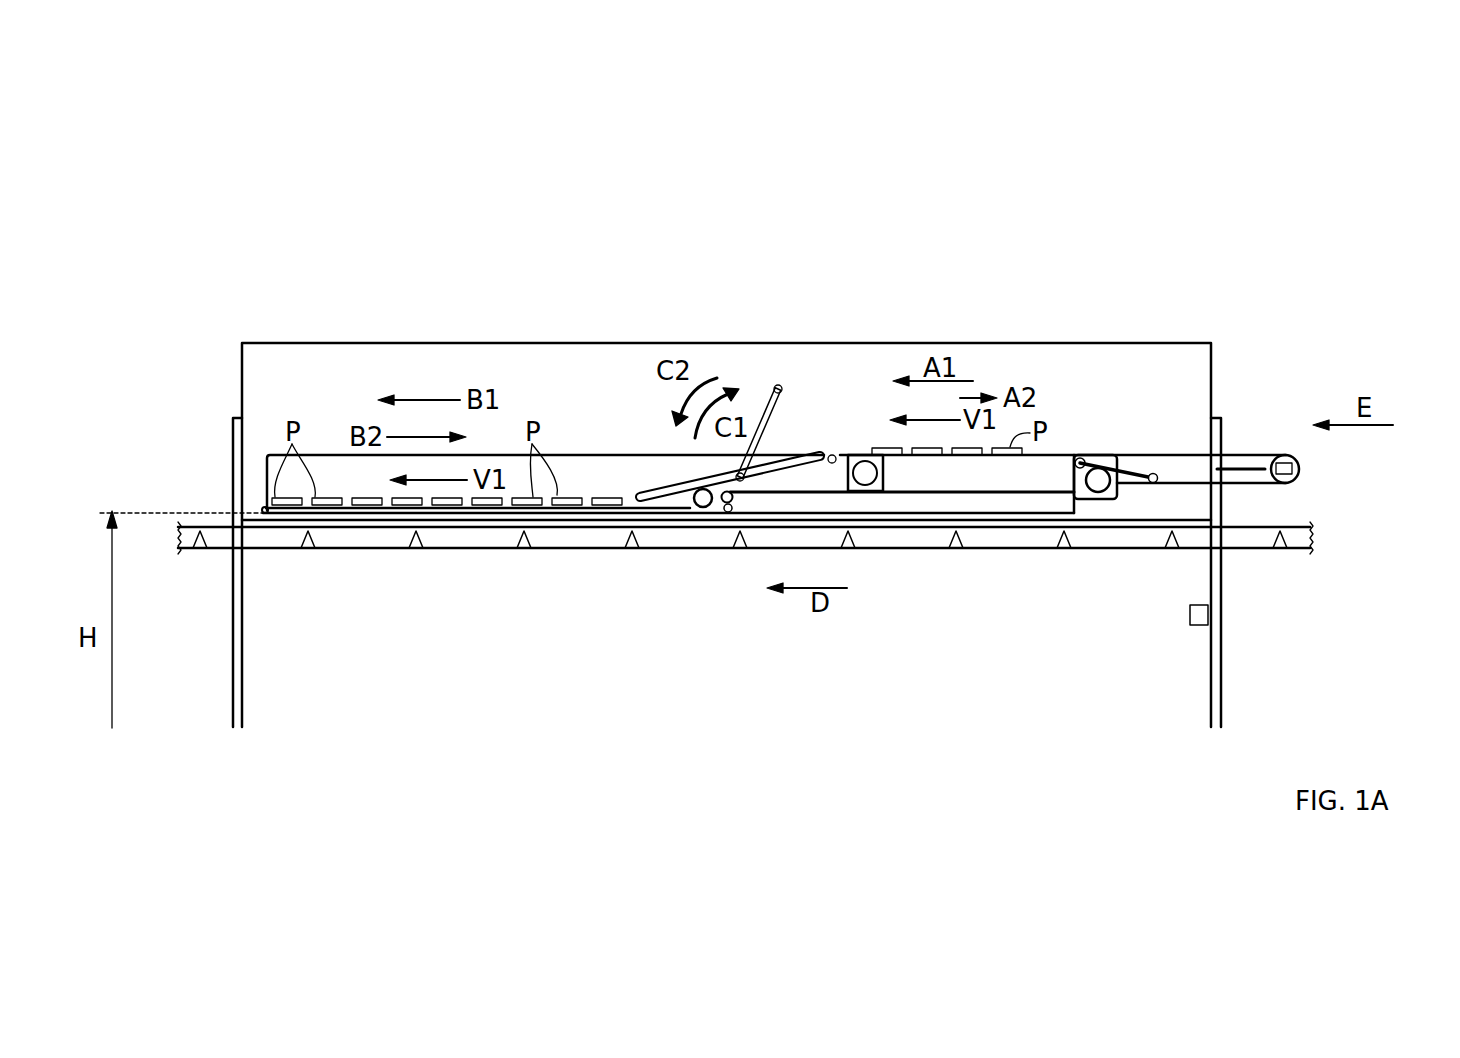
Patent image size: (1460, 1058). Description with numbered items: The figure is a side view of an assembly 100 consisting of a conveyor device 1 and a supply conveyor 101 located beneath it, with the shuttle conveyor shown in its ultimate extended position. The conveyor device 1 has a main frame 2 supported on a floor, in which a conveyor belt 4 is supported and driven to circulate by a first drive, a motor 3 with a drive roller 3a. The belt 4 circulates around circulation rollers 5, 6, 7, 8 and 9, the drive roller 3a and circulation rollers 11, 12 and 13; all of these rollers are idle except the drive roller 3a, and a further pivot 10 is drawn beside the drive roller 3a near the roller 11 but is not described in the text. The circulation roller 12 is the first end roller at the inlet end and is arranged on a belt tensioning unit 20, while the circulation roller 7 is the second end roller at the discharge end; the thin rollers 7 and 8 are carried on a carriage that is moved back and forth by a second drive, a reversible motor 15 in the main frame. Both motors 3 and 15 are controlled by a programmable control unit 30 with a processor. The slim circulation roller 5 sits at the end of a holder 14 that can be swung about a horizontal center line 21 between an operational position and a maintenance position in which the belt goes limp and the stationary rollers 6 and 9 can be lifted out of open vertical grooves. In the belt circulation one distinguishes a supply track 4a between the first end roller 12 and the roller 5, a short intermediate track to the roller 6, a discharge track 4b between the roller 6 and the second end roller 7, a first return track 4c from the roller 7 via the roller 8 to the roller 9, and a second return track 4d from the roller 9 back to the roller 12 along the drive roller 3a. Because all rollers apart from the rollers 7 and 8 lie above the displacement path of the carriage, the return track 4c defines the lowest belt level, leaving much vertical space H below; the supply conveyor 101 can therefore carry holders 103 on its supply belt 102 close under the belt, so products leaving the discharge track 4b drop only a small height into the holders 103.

The assembly 100 is at (300, 218).
The conveyor device 1 is at (1150, 246).
The main frame 2 is at (233, 652).
The motor 3 is at (1108, 455).
The drive roller 3a is at (1105, 485).
The conveyor belt 4 is at (1133, 455).
The supply track 4a is at (838, 455).
The discharge track 4b is at (327, 498).
The first return track 4c is at (588, 521).
The second return track 4d is at (1033, 496).
The circulation roller 5 is at (640, 497).
The circulation roller 6 is at (697, 504).
The circulation roller 7 is at (263, 510).
The circulation roller 8 is at (730, 503).
The circulation roller 9 is at (738, 483).
The pivot 10 is at (1078, 458).
The circulation roller 11 is at (1155, 473).
The circulation roller 12 is at (1286, 456).
The circulation roller 13 is at (832, 454).
The holder 14 is at (662, 491).
The motor 15 is at (866, 456).
The belt tensioning unit 20 is at (1250, 549).
The horizontal center line 21 is at (752, 492).
The programmable control unit 30 is at (1210, 614).
The supply conveyor 101 is at (347, 689).
The supply belt 102 is at (962, 550).
The holders 103 is at (283, 540).